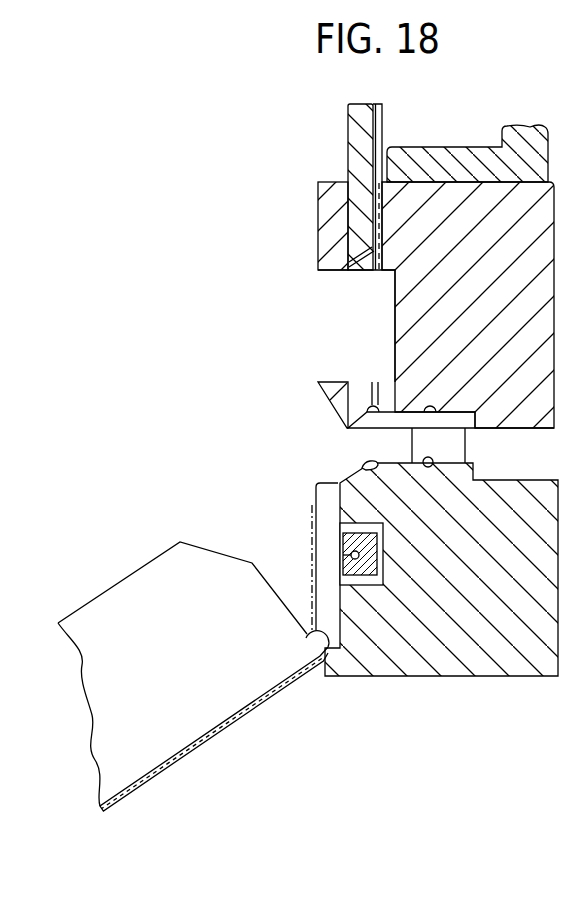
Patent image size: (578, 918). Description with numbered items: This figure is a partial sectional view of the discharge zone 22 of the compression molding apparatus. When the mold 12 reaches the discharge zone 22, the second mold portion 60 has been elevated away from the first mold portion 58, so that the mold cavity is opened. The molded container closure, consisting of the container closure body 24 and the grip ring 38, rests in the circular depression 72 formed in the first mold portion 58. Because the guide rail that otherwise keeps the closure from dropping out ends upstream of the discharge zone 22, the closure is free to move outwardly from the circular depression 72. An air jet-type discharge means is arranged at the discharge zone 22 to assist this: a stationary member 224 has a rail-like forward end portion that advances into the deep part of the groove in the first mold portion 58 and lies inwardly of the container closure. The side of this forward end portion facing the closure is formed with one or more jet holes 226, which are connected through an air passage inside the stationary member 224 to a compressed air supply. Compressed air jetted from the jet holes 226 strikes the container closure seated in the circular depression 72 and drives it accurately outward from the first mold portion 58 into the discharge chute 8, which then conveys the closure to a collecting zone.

The discharge chute 8 is at (127, 570).
The mold 12 is at (295, 354).
The discharge zone 22 is at (266, 414).
The container closure body 24 is at (311, 508).
The grip ring 38 is at (360, 467).
The first mold portion 58 is at (441, 686).
The second mold portion 60 is at (307, 233).
The circular depression 72 is at (309, 641).
The stationary member 224 is at (366, 587).
The jet holes 226 is at (340, 555).